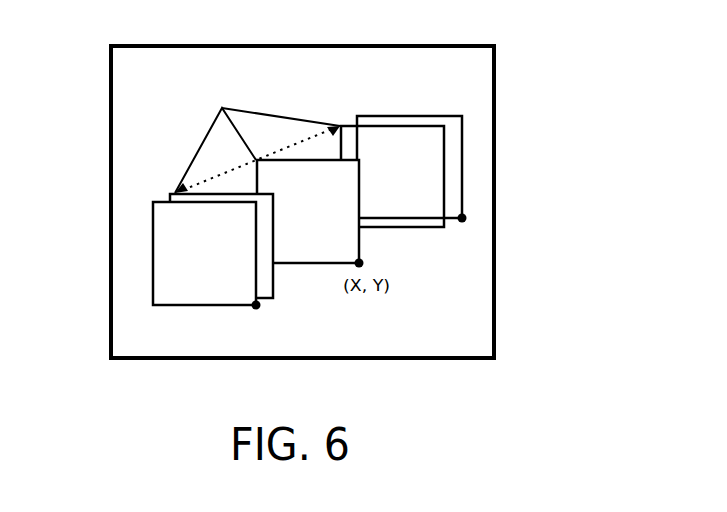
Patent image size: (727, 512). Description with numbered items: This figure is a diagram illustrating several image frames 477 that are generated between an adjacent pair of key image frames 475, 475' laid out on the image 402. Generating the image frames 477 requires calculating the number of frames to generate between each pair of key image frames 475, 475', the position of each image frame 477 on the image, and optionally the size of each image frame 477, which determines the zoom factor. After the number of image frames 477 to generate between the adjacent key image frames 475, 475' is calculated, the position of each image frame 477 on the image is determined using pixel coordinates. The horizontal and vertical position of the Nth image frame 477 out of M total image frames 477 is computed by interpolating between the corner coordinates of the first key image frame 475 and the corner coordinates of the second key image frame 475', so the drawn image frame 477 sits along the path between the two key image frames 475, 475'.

The display screen 402 is at (359, 202).
The key image frame 475 is at (163, 262).
The key image frame 475' is at (450, 156).
The image frame 477 is at (257, 137).